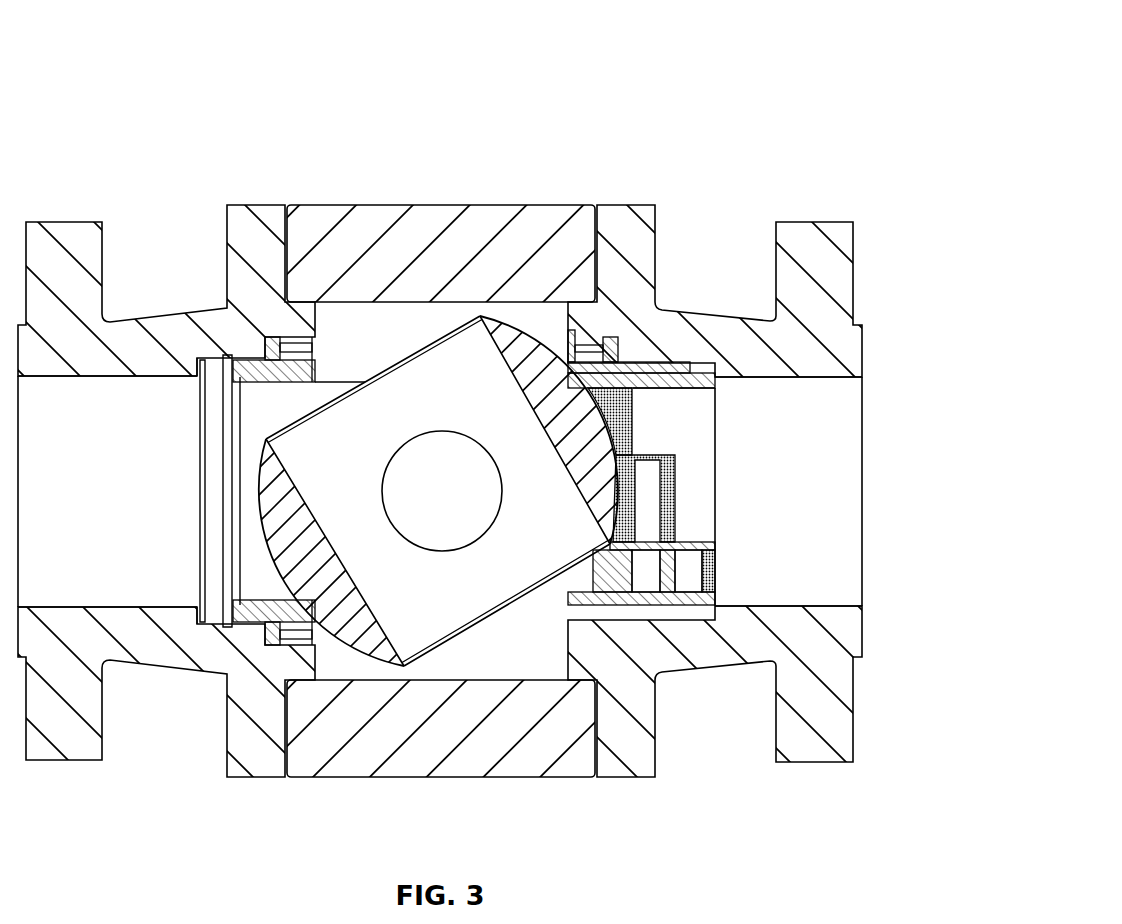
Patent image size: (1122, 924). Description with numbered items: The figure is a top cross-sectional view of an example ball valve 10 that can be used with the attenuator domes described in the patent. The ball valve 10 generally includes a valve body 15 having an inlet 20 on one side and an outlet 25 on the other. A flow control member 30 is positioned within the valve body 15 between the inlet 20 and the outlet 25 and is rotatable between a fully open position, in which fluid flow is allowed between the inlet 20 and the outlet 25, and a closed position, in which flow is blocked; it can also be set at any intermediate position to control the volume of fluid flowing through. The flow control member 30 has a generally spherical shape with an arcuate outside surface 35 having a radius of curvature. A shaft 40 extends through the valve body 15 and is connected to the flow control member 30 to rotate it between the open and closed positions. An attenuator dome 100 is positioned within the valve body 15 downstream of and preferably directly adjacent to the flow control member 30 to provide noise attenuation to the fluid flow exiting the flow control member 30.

The ball valve 10 is at (168, 63).
The valve body 15 is at (258, 752).
The inlet 20 is at (118, 417).
The outlet 25 is at (837, 481).
The flow control member 30 is at (508, 347).
The outside surface 35 is at (541, 332).
The shaft 40 is at (456, 504).
The attenuator dome 100 is at (680, 475).